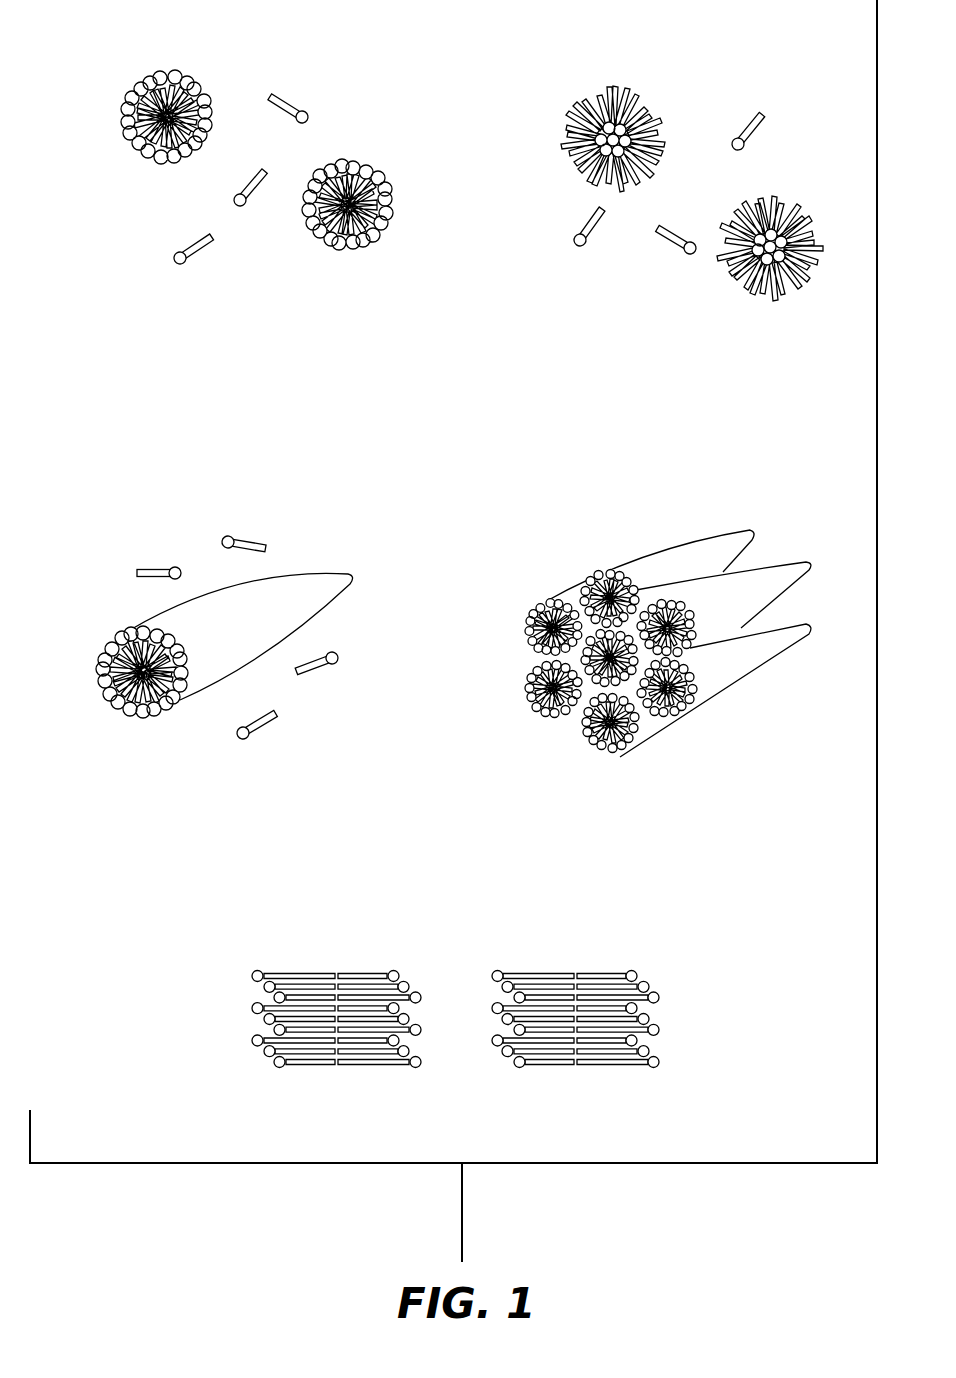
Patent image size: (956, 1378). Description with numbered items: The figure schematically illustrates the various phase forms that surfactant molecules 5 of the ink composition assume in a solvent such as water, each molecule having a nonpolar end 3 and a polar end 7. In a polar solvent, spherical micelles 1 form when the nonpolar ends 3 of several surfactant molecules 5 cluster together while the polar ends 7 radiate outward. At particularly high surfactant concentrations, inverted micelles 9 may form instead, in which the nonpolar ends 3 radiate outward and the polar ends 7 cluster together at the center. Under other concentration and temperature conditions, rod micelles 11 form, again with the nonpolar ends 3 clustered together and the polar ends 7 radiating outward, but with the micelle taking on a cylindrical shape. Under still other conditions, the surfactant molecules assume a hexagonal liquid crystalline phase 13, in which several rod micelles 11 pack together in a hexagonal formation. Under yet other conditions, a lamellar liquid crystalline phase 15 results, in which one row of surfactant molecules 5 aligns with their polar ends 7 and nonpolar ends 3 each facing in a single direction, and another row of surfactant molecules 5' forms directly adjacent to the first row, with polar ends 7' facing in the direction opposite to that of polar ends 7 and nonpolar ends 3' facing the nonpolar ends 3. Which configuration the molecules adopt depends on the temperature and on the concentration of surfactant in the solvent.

The spherical micelle 1 is at (136, 60).
The nonpolar end 3 is at (449, 576).
The surfactant molecule 5 is at (482, 476).
The polar end 7 is at (454, 593).
The inverted micelle 9 is at (562, 91).
The rod micelle 11 is at (89, 599).
The hexagonal liquid crystalline phase 13 is at (534, 568).
The lamellar liquid crystalline phase 15 is at (229, 1013).
The surfactant molecules of another row 5' is at (371, 921).
The nonpolar end of another row 3' is at (396, 1100).
The polar end of another row 7' is at (439, 1082).